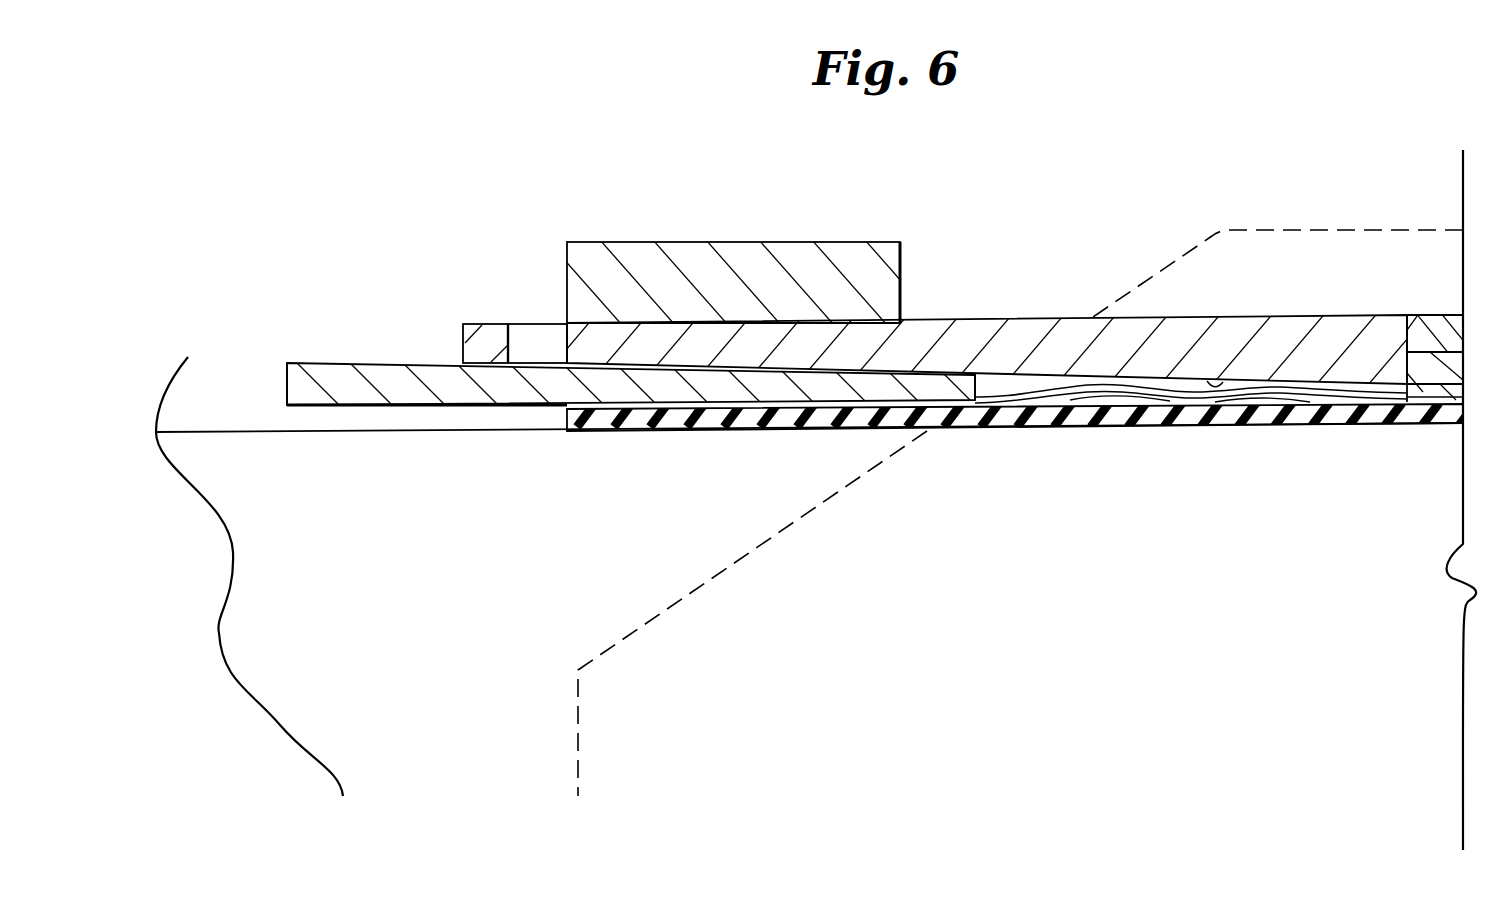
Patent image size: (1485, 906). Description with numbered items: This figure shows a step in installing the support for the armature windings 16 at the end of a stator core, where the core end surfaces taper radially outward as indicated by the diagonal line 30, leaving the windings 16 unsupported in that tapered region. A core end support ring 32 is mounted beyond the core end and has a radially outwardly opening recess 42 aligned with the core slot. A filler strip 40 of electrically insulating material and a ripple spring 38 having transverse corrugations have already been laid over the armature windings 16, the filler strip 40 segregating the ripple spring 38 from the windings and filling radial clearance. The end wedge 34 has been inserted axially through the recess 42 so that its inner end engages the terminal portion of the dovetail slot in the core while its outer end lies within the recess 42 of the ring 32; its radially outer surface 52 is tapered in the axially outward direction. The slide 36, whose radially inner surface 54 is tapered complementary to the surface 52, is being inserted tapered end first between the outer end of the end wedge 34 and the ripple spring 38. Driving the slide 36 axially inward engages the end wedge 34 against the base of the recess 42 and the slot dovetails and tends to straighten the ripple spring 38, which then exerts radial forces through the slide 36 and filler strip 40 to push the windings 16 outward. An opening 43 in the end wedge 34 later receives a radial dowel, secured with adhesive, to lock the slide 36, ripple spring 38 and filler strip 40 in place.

The armature windings 16 is at (410, 570).
The diagonal line 30 is at (1198, 238).
The core end support ring 32 is at (874, 242).
The end wedge 34 is at (994, 323).
The slide 36 is at (285, 385).
The ripple spring 38 is at (1126, 390).
The filler strip 40 is at (1303, 413).
The recess 42 is at (732, 326).
The opening 43 is at (543, 337).
The radially outer surface 52 is at (1212, 383).
The radially inner surface 54 is at (381, 362).